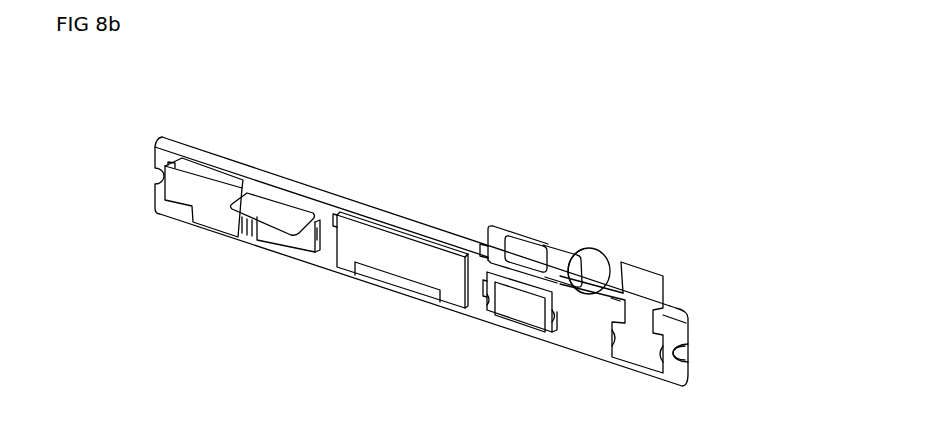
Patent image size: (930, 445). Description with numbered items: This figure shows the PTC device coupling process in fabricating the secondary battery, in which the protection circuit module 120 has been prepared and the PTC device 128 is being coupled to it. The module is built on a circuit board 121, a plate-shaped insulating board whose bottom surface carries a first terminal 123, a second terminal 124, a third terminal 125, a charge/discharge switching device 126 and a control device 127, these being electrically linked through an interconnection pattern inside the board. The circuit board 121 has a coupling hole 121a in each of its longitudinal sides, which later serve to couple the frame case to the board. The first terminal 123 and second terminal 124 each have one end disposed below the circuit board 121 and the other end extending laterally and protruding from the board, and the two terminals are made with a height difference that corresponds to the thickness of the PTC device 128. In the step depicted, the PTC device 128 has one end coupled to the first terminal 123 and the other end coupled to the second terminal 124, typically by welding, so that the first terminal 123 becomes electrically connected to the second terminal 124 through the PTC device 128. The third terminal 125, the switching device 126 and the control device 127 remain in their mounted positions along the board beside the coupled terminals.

The keypad assembly 120 is at (707, 388).
The circuit board 121 is at (584, 336).
The coupling hole 121a is at (676, 354).
The first terminal 123 is at (497, 238).
The second terminal 124 is at (640, 278).
The third terminal 125 is at (273, 206).
The charge/discharge switching device 126 is at (400, 245).
The control device 127 is at (203, 183).
The PTC device 128 is at (590, 257).